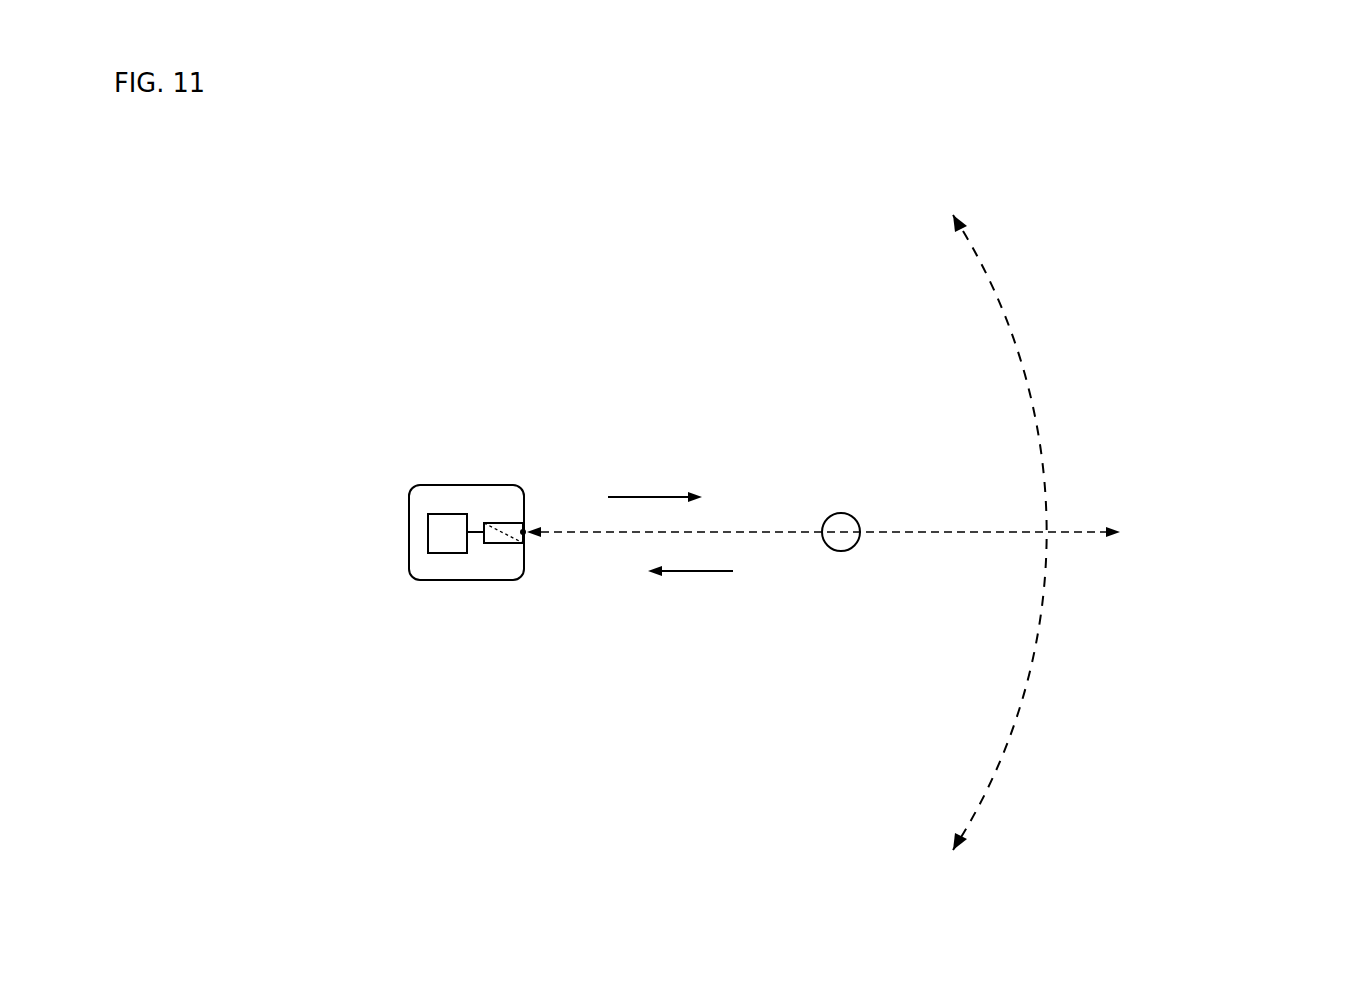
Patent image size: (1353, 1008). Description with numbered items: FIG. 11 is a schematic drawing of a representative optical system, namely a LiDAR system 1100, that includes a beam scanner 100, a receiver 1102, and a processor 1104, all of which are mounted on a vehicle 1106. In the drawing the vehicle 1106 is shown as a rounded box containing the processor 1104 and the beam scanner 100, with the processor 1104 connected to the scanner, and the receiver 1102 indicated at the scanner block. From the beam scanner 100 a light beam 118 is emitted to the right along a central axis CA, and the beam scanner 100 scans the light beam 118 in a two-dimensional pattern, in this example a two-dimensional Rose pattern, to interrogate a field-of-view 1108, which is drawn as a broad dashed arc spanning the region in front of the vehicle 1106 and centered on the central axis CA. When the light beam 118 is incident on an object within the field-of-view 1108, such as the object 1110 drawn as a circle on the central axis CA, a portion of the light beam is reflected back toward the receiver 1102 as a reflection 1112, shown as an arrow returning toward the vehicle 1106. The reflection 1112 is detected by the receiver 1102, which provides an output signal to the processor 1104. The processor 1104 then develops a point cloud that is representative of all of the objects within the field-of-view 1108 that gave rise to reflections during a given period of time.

The LiDAR system 1100 is at (262, 283).
The vehicle 1106 is at (409, 535).
The processor 1104 is at (448, 532).
The beam scanner 100 is at (505, 524).
The receiver 1102 is at (505, 545).
The central axis CA is at (1083, 534).
The light beam 118 is at (647, 497).
The reflection 1112 is at (688, 572).
The object 1110 is at (841, 513).
The field-of-view 1108 is at (862, 316).